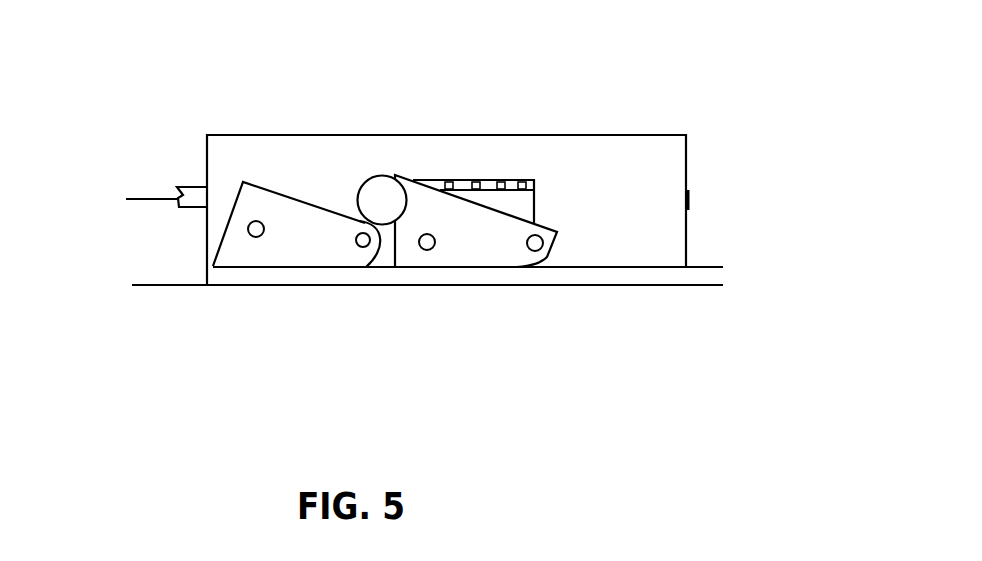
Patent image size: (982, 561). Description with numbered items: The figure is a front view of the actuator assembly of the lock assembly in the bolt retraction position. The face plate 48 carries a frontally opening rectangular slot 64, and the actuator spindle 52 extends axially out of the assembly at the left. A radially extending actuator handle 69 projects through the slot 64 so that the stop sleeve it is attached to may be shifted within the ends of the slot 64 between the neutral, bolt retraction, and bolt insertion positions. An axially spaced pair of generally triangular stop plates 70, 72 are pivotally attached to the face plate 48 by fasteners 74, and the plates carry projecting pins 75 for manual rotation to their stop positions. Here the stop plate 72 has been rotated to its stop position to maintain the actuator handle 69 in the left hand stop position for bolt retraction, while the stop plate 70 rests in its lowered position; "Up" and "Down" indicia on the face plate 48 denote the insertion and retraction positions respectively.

The face plate 48 is at (666, 165).
The actuator spindle 52 is at (190, 192).
The rectangular slots 64 is at (468, 180).
The actuator handle 69 is at (378, 187).
The stop plate 70 is at (294, 254).
The stop plate 72 is at (480, 250).
The fasteners 74 is at (365, 247).
The projecting pins 75 is at (254, 237).